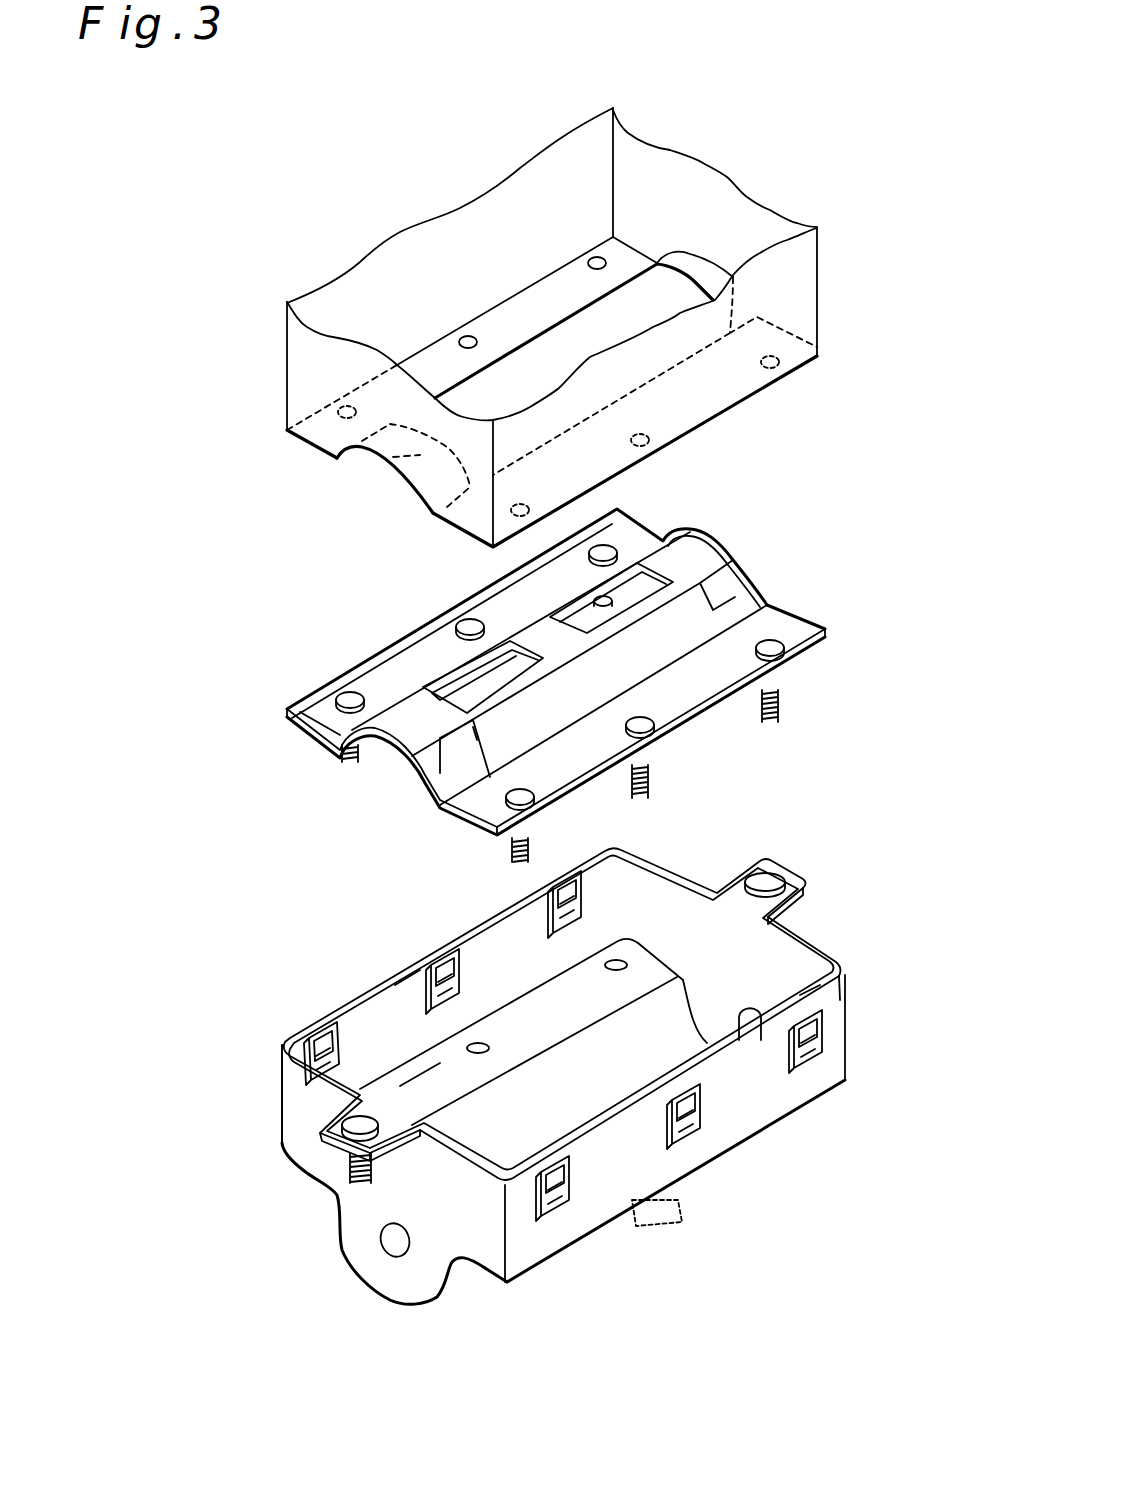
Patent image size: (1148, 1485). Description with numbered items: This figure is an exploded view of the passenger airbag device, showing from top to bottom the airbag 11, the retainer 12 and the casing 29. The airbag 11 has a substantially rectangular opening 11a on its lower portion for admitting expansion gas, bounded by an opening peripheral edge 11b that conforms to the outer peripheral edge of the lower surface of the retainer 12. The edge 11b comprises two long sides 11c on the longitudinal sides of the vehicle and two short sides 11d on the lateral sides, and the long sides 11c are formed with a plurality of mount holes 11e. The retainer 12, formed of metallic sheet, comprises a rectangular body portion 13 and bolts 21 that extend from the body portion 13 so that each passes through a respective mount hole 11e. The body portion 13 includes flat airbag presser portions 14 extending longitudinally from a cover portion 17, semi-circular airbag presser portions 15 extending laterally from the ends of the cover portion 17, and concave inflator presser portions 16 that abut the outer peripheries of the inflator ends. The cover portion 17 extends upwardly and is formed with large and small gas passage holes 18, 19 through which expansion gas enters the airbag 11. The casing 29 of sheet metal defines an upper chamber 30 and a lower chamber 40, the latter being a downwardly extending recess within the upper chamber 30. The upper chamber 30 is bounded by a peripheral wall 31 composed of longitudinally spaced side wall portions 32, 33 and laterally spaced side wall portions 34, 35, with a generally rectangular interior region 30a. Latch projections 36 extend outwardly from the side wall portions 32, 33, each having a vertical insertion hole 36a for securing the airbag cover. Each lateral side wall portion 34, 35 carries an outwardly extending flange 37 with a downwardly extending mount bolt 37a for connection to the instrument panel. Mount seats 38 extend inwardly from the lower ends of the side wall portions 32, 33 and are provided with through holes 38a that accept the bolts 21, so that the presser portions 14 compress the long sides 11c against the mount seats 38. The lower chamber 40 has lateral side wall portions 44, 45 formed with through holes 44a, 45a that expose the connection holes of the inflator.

The airbag 11 is at (798, 183).
The opening 11a is at (577, 335).
The opening peripheral edge 11b is at (420, 370).
The long sides 11c is at (717, 397).
The short sides 11d is at (708, 267).
The mount holes 11e is at (595, 257).
The retainer 12 is at (795, 565).
The body portion 13 is at (830, 637).
The airbag presser portions 14 is at (397, 677).
The airbag presser portions 15 is at (460, 733).
The inflator presser portions 16 is at (485, 765).
The cover portion 17 is at (527, 630).
The large gas passage hole 18 is at (470, 697).
The small gas passage hole 19 is at (557, 603).
The bolts 21 is at (345, 757).
The casing 29 is at (280, 987).
The upper chamber 30 is at (530, 1232).
The bottom plate 30a is at (690, 900).
The peripheral wall 31 is at (723, 1020).
The side wall portion 32 is at (392, 993).
The side wall portion 33 is at (750, 1090).
The side wall portion 34 is at (303, 1087).
The side wall portion 35 is at (807, 967).
The latch projections 36 is at (322, 1028).
The insertion hole 36a is at (458, 975).
The flange 37 is at (328, 1130).
The mount bolt 37a is at (348, 1167).
The mount seats 38 is at (410, 1103).
The through holes 38a is at (479, 1043).
The lower chamber 40 is at (458, 1300).
The side wall portion 44 is at (380, 1273).
The through hole 44a is at (380, 1235).
The side wall portion 45 is at (748, 980).
The through hole 45a is at (790, 1008).